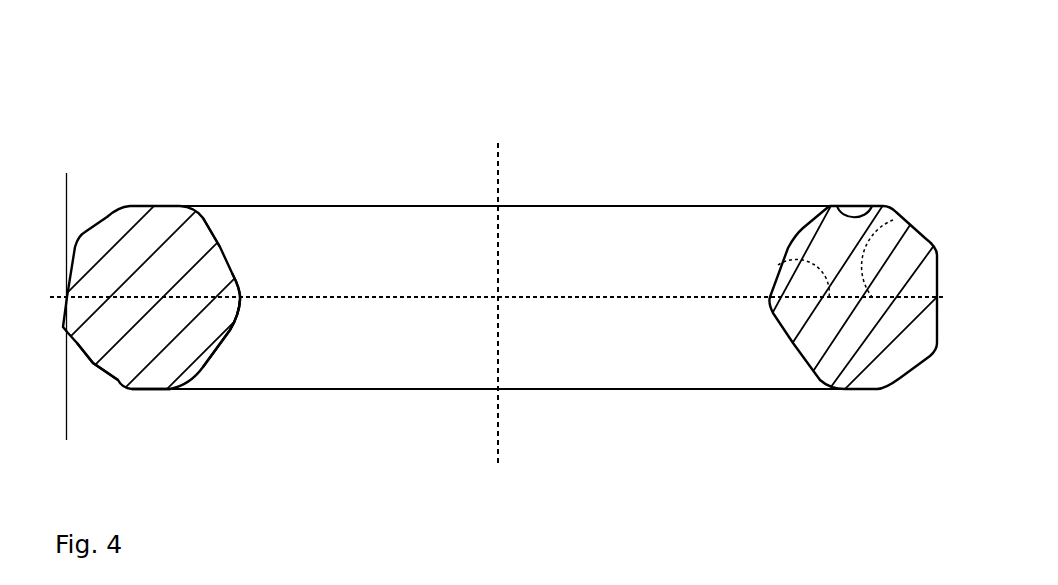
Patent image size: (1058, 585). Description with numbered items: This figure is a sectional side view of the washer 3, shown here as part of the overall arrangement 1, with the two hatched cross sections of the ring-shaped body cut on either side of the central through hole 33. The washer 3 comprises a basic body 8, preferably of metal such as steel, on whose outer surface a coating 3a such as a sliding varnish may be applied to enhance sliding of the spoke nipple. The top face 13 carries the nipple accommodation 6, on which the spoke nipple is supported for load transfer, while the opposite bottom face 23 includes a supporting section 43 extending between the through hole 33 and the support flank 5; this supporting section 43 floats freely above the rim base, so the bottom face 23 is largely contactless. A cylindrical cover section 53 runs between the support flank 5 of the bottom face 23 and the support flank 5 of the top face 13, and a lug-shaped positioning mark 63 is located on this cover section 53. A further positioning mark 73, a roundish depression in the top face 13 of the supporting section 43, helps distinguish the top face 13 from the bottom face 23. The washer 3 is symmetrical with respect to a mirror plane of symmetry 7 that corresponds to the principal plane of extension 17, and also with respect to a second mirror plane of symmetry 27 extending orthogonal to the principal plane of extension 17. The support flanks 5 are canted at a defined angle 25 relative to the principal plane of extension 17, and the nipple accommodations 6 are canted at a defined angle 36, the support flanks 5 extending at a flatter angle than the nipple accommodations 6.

The piston ring 1 is at (114, 78).
The washer 3 is at (158, 200).
The coating 3a is at (232, 330).
The support flank 5 is at (105, 375).
The nipple accommodation 6 is at (224, 243).
The mirror plane of symmetry 7 is at (413, 297).
The basic body 8 is at (220, 313).
The top face 13 is at (345, 205).
The principal plane of extension 17 is at (498, 116).
The bottom face 23 is at (313, 389).
The defined angle 25 is at (885, 223).
The mirror plane of symmetry 27 is at (498, 245).
The through hole 33 is at (320, 251).
The defined angle 36 is at (800, 258).
The supporting section 43 is at (168, 390).
The cover section 53 is at (68, 225).
The positioning mark 63 is at (72, 387).
The positioning mark 73 is at (855, 207).